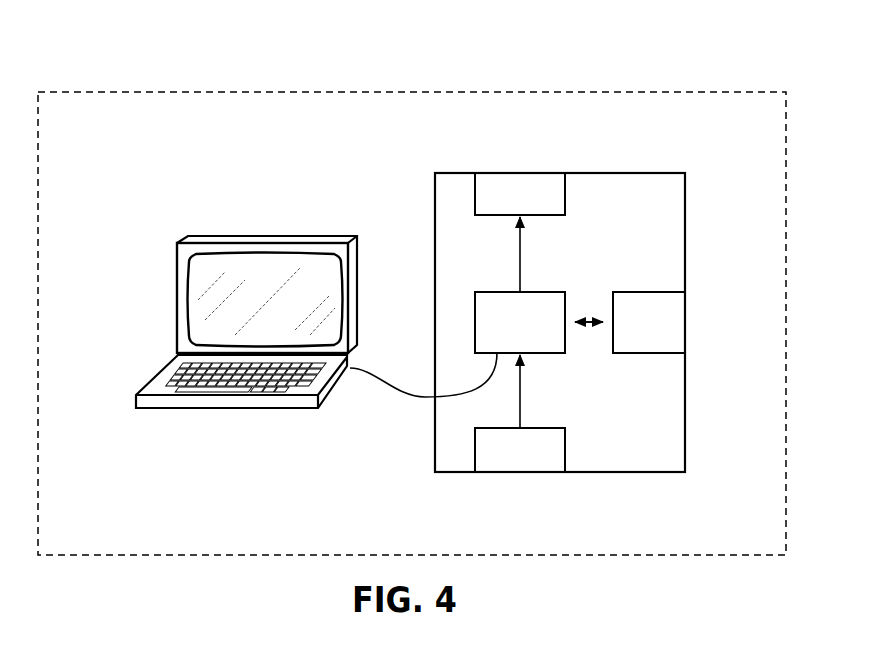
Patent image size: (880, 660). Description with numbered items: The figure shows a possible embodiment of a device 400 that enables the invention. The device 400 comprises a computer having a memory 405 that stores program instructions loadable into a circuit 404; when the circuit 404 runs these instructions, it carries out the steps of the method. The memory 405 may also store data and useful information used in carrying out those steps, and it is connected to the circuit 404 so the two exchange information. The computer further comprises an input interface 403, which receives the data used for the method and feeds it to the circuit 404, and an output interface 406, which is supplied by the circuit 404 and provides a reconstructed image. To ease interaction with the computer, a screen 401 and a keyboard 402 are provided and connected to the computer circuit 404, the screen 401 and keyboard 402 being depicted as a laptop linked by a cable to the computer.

The device 400 is at (672, 88).
The display 401 is at (218, 236).
The keyboard / input device 402 is at (157, 366).
The input interface 403 is at (546, 477).
The circuit 404 is at (572, 295).
The memory 405 is at (689, 296).
The output interface 406 is at (546, 170).